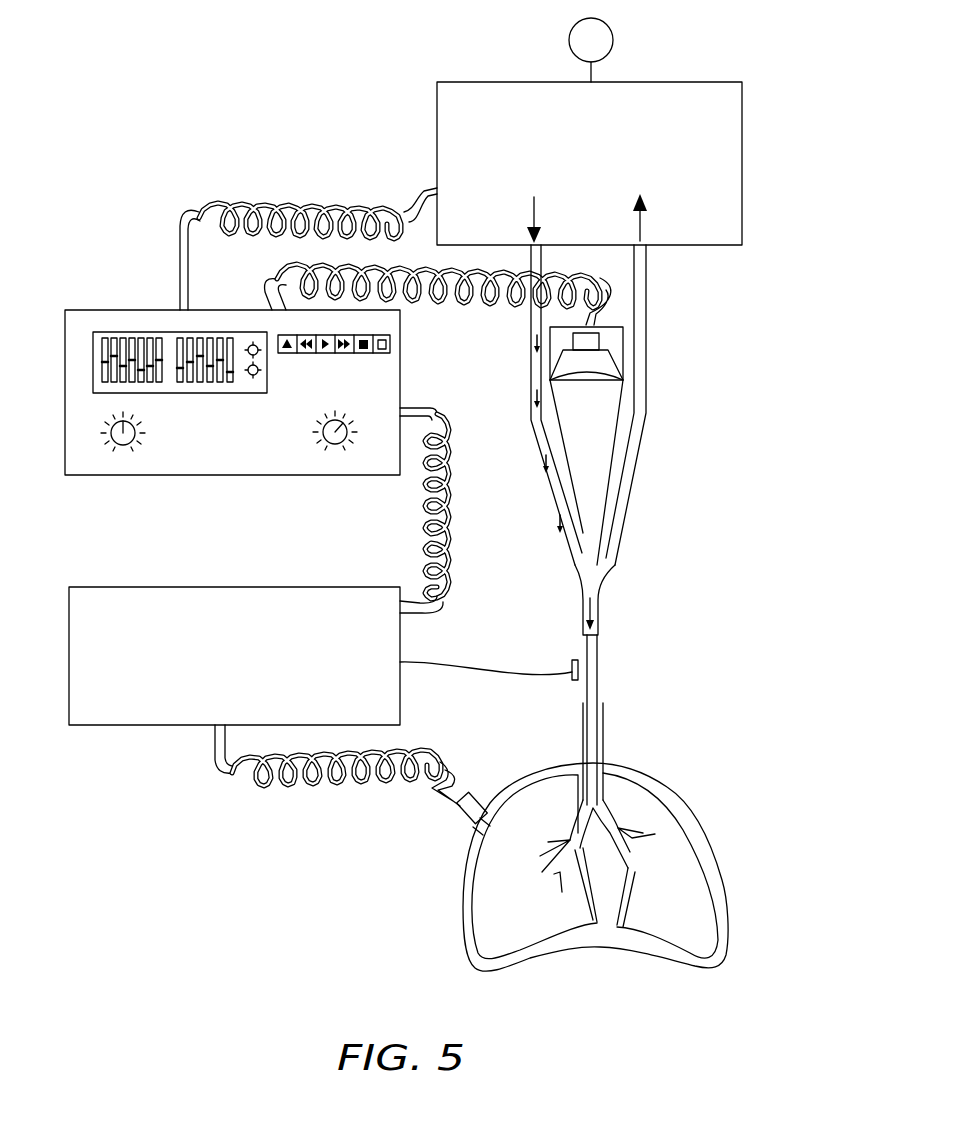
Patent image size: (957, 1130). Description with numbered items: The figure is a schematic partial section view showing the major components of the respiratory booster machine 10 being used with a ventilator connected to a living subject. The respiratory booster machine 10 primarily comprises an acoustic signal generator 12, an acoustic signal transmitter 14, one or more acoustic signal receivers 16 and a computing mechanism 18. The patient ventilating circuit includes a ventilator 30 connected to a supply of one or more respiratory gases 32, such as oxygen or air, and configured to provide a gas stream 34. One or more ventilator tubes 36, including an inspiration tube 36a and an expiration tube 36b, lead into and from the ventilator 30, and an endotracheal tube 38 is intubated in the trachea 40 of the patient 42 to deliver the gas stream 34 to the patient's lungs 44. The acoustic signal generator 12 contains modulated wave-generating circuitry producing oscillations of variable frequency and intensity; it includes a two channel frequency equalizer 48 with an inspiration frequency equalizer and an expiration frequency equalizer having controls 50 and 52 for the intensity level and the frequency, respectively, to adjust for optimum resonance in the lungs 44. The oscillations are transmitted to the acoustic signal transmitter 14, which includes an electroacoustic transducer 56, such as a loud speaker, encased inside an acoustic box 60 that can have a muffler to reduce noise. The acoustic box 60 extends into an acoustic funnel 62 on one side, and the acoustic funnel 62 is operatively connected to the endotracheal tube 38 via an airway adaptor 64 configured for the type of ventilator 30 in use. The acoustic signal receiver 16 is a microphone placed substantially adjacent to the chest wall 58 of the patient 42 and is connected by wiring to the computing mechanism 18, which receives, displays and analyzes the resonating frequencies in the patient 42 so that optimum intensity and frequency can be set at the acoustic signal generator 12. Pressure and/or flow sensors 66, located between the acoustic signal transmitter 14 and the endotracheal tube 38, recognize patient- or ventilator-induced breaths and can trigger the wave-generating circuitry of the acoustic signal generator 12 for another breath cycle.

The respiratory booster machine 10 is at (220, 160).
The acoustic signal generator 12 is at (100, 306).
The acoustic signal transmitter 14 is at (625, 450).
The acoustic signal receiver 16 is at (466, 836).
The computing mechanism 18 is at (168, 690).
The ventilator 30 is at (733, 104).
The supply of respiratory gases 32 is at (604, 32).
The gas stream 34 is at (585, 611).
The ventilator tubes 36 is at (538, 488).
The inspiration tube 36a is at (538, 432).
The expiration tube 36b is at (645, 394).
The endotracheal tube 38 is at (590, 669).
The trachea 40 is at (603, 733).
The patient 42 is at (688, 791).
The lungs 44 is at (680, 864).
The two channel frequency equalizer 48 is at (93, 370).
The intensity level control 50 is at (110, 434).
The frequency control 52 is at (318, 436).
The electroacoustic transducer 56 is at (600, 361).
The chest wall 58 is at (467, 887).
The acoustic box 60 is at (548, 352).
The acoustic funnel 62 is at (602, 483).
The airway adaptor 64 is at (604, 583).
The pressure and/or flow sensors 66 is at (574, 684).